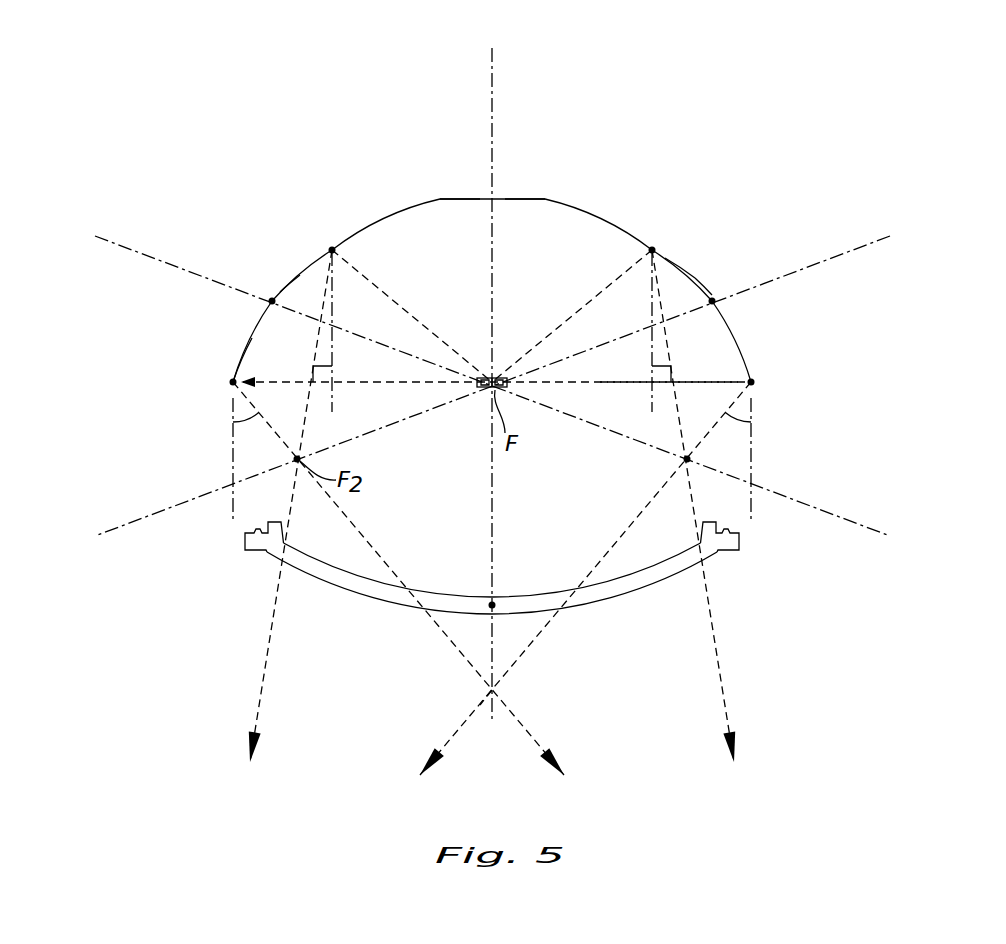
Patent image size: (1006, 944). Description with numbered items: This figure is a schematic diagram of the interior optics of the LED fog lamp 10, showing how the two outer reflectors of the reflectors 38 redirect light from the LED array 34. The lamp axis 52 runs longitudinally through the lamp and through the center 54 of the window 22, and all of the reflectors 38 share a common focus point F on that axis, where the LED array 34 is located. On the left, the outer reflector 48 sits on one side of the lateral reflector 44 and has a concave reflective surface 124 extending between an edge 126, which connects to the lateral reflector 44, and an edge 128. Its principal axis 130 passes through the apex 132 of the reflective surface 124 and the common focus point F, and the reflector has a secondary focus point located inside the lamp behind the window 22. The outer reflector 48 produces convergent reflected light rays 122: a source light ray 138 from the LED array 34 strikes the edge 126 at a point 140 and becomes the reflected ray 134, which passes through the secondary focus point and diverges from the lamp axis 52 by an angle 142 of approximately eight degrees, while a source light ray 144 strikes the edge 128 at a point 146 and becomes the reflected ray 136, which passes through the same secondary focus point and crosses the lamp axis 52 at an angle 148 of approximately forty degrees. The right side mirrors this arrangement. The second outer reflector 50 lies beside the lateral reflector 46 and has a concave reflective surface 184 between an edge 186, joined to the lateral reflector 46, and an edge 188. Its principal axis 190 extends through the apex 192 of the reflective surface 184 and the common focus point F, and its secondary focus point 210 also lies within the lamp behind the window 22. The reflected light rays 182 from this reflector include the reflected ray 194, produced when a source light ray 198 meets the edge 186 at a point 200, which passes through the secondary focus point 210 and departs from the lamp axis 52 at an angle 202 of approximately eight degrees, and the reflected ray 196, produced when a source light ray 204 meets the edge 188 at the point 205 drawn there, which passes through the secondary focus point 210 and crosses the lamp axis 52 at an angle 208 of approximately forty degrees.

The fog lamp 10 is at (826, 120).
The window 22 is at (710, 553).
The LED array 34 is at (510, 385).
The reflectors 38 is at (232, 197).
The lateral reflector 44 is at (410, 207).
The lateral reflector 46 is at (581, 216).
The outer reflector 48 is at (232, 380).
The second outer reflector 50 is at (684, 266).
The lamp axis 52 is at (492, 95).
The center of the window 54 is at (495, 605).
The reflected light rays 122 is at (292, 679).
The reflective surface 124 is at (281, 274).
The edge 126 is at (332, 236).
The edge 128 is at (220, 382).
The principal axis 130 is at (152, 257).
The apex 132 is at (271, 302).
The reflected ray 134 is at (268, 630).
The reflected ray 136 is at (444, 636).
The source light ray 138 is at (401, 306).
The point 140 is at (331, 249).
The angle 142 is at (330, 372).
The source light ray 144 is at (410, 384).
The point 146 is at (232, 384).
The angle 148 is at (249, 424).
The reflected light rays 182 is at (692, 679).
The reflective surface 184 is at (713, 277).
The edge 186 is at (660, 238).
The edge 188 is at (772, 382).
The principal axis 190 is at (835, 257).
The apex 192 is at (713, 302).
The reflected ray 194 is at (714, 630).
The reflected ray 196 is at (540, 636).
The source light ray 198 is at (582, 306).
The point 200 is at (652, 248).
The angle 202 is at (660, 373).
The source light ray 204 is at (585, 384).
The right end point 205 is at (752, 380).
The angle 208 is at (740, 423).
The secondary focus point 210 is at (685, 460).